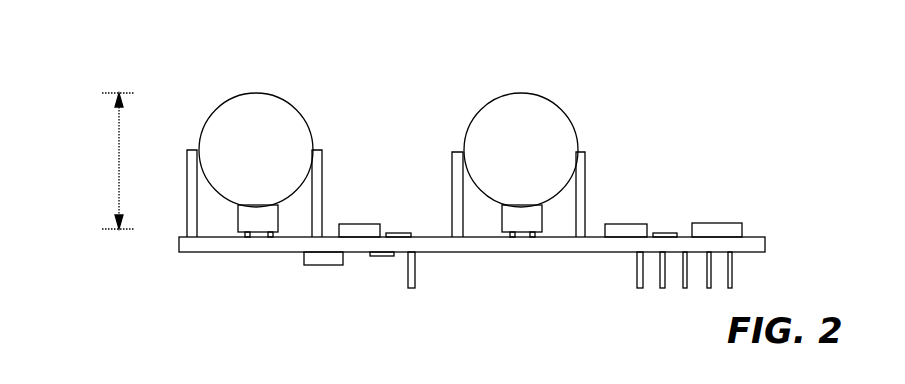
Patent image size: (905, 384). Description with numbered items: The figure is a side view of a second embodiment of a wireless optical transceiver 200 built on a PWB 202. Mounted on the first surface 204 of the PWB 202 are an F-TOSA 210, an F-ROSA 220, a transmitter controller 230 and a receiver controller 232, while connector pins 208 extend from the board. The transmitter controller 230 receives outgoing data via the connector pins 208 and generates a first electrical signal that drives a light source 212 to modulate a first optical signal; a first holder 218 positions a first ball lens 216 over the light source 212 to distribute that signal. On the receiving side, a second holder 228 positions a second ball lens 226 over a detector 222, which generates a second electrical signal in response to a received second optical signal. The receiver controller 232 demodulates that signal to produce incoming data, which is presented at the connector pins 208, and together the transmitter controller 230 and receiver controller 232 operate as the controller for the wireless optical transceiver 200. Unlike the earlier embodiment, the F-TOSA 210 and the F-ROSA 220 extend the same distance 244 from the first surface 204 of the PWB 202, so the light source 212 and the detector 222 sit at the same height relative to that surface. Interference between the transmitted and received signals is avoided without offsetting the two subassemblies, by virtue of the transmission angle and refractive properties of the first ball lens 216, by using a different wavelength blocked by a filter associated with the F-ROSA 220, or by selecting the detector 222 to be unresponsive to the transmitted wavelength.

The wireless optical transceiver 200 is at (88, 57).
The PWB 202 is at (762, 252).
The first surface 204 is at (753, 235).
The connector pins 208 is at (658, 289).
The F-TOSA 210 is at (297, 77).
The light source 212 is at (238, 218).
The first ball lens 216 is at (243, 98).
The first holder 218 is at (318, 150).
The F-ROSA 220 is at (543, 77).
The detector 222 is at (503, 222).
The second ball lens 226 is at (495, 108).
The second holder 228 is at (580, 152).
The transmitter controller 230 is at (357, 224).
The receiver controller 232 is at (620, 224).
The same distance 244 is at (119, 172).